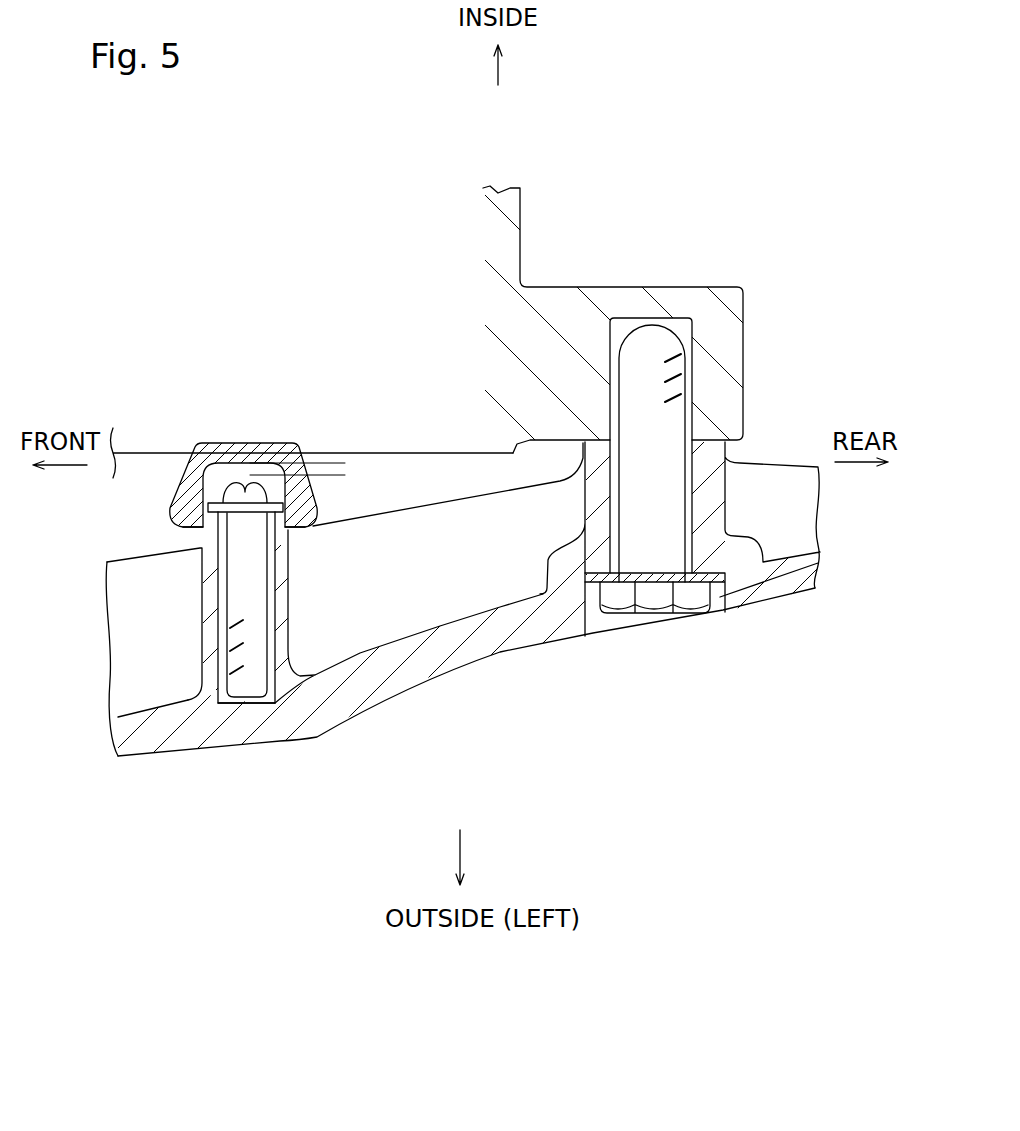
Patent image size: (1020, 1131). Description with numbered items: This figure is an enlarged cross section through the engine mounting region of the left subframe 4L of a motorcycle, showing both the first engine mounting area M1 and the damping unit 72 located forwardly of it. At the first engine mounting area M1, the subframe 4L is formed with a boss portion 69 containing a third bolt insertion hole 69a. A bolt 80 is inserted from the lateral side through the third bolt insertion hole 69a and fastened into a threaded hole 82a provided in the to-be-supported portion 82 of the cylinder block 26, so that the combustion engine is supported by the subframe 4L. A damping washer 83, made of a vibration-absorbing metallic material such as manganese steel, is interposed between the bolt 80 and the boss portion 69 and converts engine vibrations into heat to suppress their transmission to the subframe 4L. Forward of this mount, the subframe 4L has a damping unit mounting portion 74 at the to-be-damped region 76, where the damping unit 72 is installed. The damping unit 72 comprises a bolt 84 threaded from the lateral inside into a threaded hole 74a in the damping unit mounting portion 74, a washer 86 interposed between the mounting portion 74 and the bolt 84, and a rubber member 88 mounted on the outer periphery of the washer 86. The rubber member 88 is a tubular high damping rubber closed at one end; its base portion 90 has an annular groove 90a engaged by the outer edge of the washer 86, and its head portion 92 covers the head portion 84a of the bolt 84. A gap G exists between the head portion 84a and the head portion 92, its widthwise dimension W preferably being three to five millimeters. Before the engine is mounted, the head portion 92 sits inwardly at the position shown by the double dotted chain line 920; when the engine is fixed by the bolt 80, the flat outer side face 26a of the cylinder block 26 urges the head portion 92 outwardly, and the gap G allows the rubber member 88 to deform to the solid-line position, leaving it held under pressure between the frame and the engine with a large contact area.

The cylinder block 26 is at (490, 205).
The outer side face of the cylinder block 26a is at (403, 454).
The to-be-supported portion 82 is at (567, 297).
The threaded hole 82a is at (677, 317).
The boss portion 69 is at (737, 553).
The third bolt insertion hole 69a is at (683, 455).
The damping washer 83 is at (728, 580).
The bolt 80 is at (657, 606).
The first engine mounting area M1 is at (712, 638).
The damping unit mounting portion 74 is at (282, 640).
The threaded hole 74a is at (237, 707).
The bolt 84 is at (255, 670).
The head portion of the bolt 84a is at (253, 470).
The washer 86 is at (280, 577).
The to-be-damped region 76 is at (170, 643).
The subframe 4L is at (155, 757).
The rubber member 88 is at (100, 483).
The head portion of the rubber member 92 is at (183, 473).
The base portion 90 is at (200, 552).
The annular groove 90a is at (300, 537).
The damping unit 72 is at (165, 430).
The double dotted chain line 920 is at (210, 440).
The gap G is at (230, 443).
The widthwise dimension of the gap W is at (339, 445).